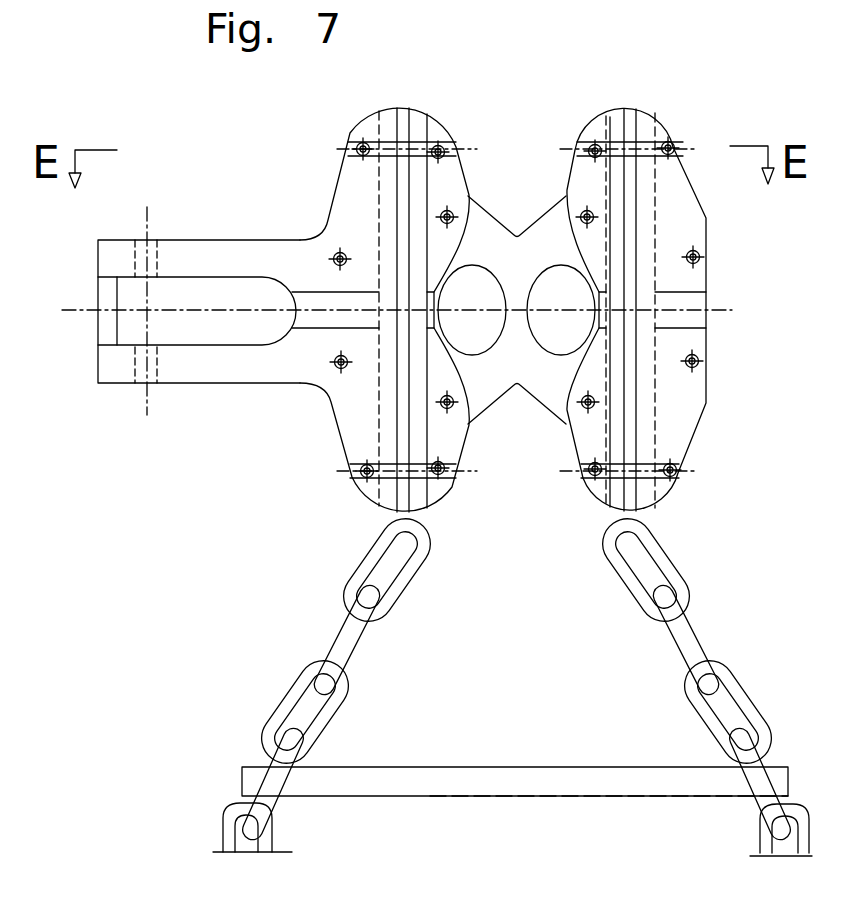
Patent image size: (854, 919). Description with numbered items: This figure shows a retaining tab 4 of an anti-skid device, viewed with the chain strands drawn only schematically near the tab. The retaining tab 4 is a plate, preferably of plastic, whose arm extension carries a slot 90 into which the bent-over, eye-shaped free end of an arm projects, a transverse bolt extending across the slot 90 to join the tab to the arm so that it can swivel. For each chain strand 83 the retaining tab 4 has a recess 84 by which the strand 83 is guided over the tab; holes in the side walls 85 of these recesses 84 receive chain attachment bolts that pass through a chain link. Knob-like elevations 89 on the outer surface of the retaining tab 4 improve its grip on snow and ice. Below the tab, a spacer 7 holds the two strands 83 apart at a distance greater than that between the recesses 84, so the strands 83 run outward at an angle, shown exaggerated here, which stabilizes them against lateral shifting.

The retaining tab 4 is at (483, 227).
The spacer 7 is at (398, 782).
The strand 83 is at (278, 717).
The recess 84 is at (400, 417).
The side wall 85 is at (645, 378).
The knob-like elevation 89 is at (700, 254).
The slot 90 is at (205, 298).